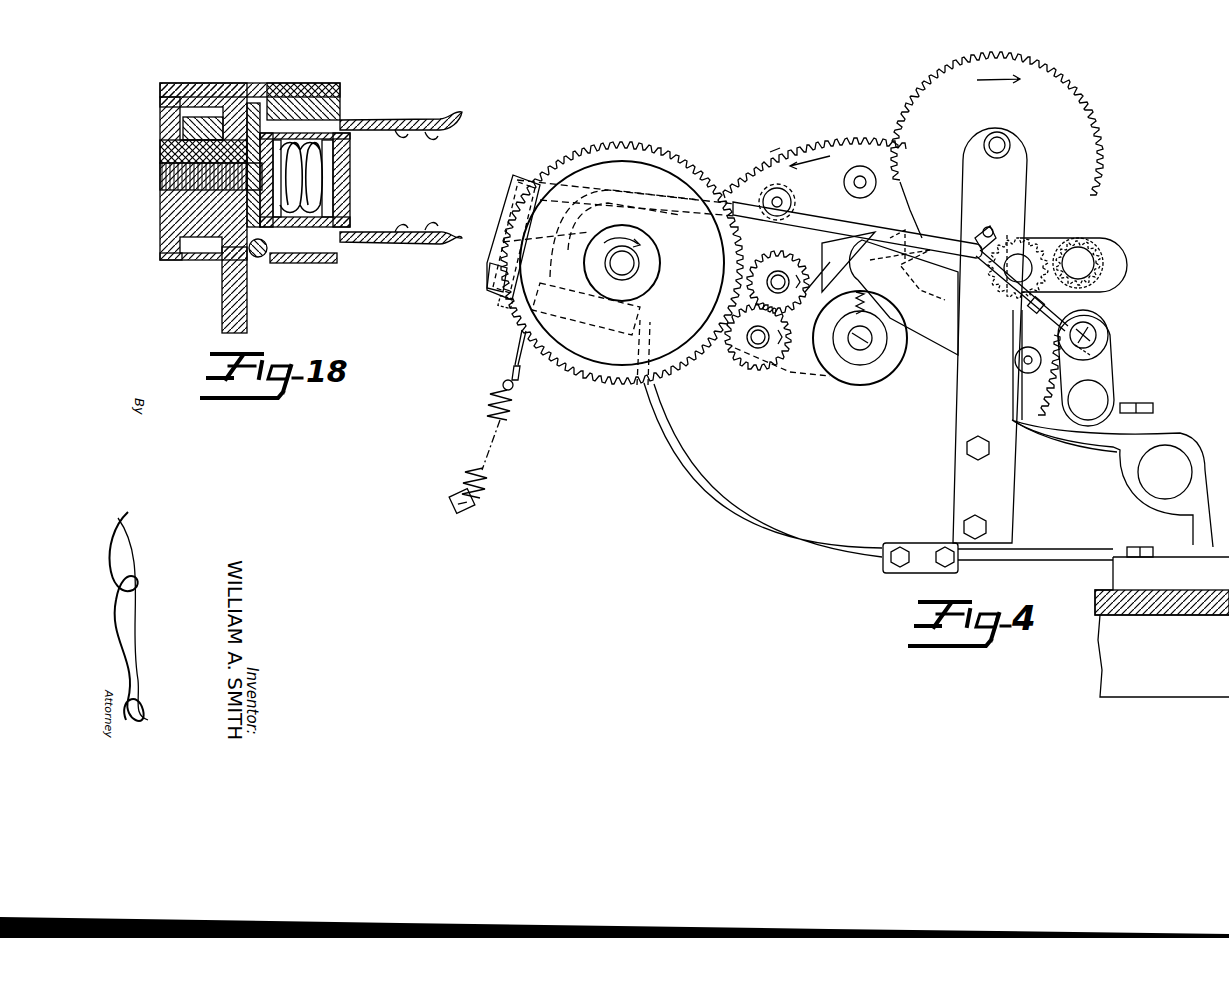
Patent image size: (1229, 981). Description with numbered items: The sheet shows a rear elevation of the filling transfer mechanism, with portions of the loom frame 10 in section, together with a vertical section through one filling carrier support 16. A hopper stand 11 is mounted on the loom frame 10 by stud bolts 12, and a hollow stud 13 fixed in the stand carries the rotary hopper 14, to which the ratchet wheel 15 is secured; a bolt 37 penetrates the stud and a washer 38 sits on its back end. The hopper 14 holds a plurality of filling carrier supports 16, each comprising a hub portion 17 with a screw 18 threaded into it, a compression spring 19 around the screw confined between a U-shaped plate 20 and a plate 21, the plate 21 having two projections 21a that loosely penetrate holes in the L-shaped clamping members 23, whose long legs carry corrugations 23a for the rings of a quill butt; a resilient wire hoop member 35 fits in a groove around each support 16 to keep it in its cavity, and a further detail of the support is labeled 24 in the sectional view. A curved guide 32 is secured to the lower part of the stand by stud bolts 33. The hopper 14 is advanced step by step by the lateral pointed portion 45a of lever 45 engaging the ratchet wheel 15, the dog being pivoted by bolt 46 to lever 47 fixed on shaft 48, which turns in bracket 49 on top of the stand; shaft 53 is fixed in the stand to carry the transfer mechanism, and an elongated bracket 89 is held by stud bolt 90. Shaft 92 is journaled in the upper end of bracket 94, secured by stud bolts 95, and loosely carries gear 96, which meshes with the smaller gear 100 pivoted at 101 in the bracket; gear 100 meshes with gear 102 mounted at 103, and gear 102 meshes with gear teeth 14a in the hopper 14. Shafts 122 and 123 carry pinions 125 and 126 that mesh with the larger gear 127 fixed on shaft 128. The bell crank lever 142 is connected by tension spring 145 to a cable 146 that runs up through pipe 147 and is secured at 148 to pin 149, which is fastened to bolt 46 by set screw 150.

In FIG. 4, the loom frame 10 is at (1162, 627).
In FIG. 4, the hopper stand 11 is at (512, 178).
In FIG. 4, the stud bolts 12 is at (1150, 546).
In FIG. 4, the stud 13 is at (820, 356).
In FIG. 18, the rotary hopper 14 is at (310, 83).
In FIG. 4, the rotary hopper 14 is at (818, 140).
In FIG. 18, the gear teeth 14a is at (185, 83).
In FIG. 4, the gear teeth 14a is at (775, 152).
In FIG. 4, the ratchet wheel 15 is at (918, 328).
In FIG. 18, the filling carrier support 16 is at (158, 140).
In FIG. 4, the filling carrier support 16 is at (848, 178).
In FIG. 18, the hub portion 17 is at (160, 205).
In FIG. 18, the screw 18 is at (350, 180).
In FIG. 4, the screw 18 is at (765, 200).
In FIG. 18, the compression spring 19 is at (350, 204).
In FIG. 18, the U-shaped plate 20 is at (350, 152).
In FIG. 18, the plate 21 is at (213, 149).
In FIG. 18, the projections 21a is at (248, 85).
In FIG. 18, the clamping members 23 is at (437, 120).
In FIG. 18, the corrugations 23a is at (418, 142).
In FIG. 18, the notch 24 is at (200, 250).
In FIG. 4, the curved guide 32 is at (905, 568).
In FIG. 4, the stud bolts 33 is at (942, 546).
In FIG. 18, the resilient wire hoop member 35 is at (258, 258).
In FIG. 4, the bolt 37 is at (852, 350).
In FIG. 4, the washer 38 is at (874, 355).
In FIG. 4, the lever 45 is at (1014, 340).
In FIG. 4, the lateral pointed portion 45a is at (890, 232).
In FIG. 4, the bolt 46 is at (1100, 326).
In FIG. 4, the lever 47 is at (1110, 370).
In FIG. 4, the shaft 48 is at (1108, 396).
In FIG. 4, the bracket 49 is at (1143, 418).
In FIG. 4, the shaft 53 is at (1112, 483).
In FIG. 4, the elongated bracket 89 is at (490, 282).
In FIG. 4, the stud bolt 90 is at (500, 305).
In FIG. 4, the shaft 92 is at (990, 335).
In FIG. 4, the bracket 94 is at (996, 229).
In FIG. 4, the stud bolts 95 is at (980, 462).
In FIG. 4, the gear 96 is at (1072, 110).
In FIG. 4, the gear 100 is at (1002, 232).
In FIG. 4, the pivot 101 is at (1018, 268).
In FIG. 4, the gear 102 is at (1080, 240).
In FIG. 4, the mounting 103 is at (1078, 263).
In FIG. 4, the shaft 122 is at (783, 282).
In FIG. 4, the shaft 123 is at (764, 337).
In FIG. 4, the pinion 125 is at (776, 282).
In FIG. 4, the pinion 126 is at (758, 337).
In FIG. 4, the gear 127 is at (606, 142).
In FIG. 4, the shaft 128 is at (622, 263).
In FIG. 4, the bell crank lever 142 is at (458, 484).
In FIG. 4, the tension spring 145 is at (492, 394).
In FIG. 4, the cable 146 is at (508, 345).
In FIG. 4, the pipe 147 is at (856, 230).
In FIG. 4, the cable securing point 148 is at (1046, 375).
In FIG. 4, the pin 149 is at (1100, 346).
In FIG. 4, the set screw 150 is at (1065, 350).